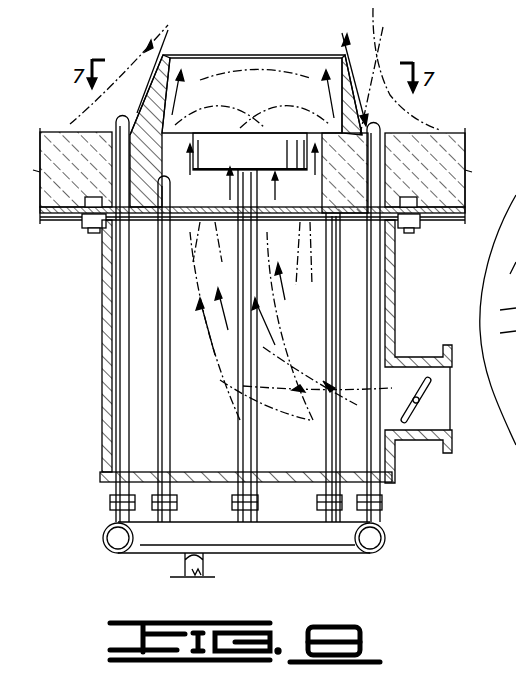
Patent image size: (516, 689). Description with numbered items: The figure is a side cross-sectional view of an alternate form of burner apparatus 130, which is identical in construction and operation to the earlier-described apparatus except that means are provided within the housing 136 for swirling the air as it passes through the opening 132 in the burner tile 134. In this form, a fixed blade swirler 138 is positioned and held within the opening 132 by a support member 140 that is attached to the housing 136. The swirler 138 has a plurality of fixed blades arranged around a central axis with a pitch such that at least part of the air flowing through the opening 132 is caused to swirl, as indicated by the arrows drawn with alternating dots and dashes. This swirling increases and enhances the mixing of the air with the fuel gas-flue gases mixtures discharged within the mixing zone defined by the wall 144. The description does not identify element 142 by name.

The burner apparatus 130 is at (218, 44).
The opening 132 is at (313, 175).
The burner tile 134 is at (373, 120).
The housing 136 is at (103, 362).
The fixed blade swirler 138 is at (291, 321).
The support member 140 is at (242, 412).
The hood air circulation 142 is at (340, 85).
The wall 144 is at (332, 46).